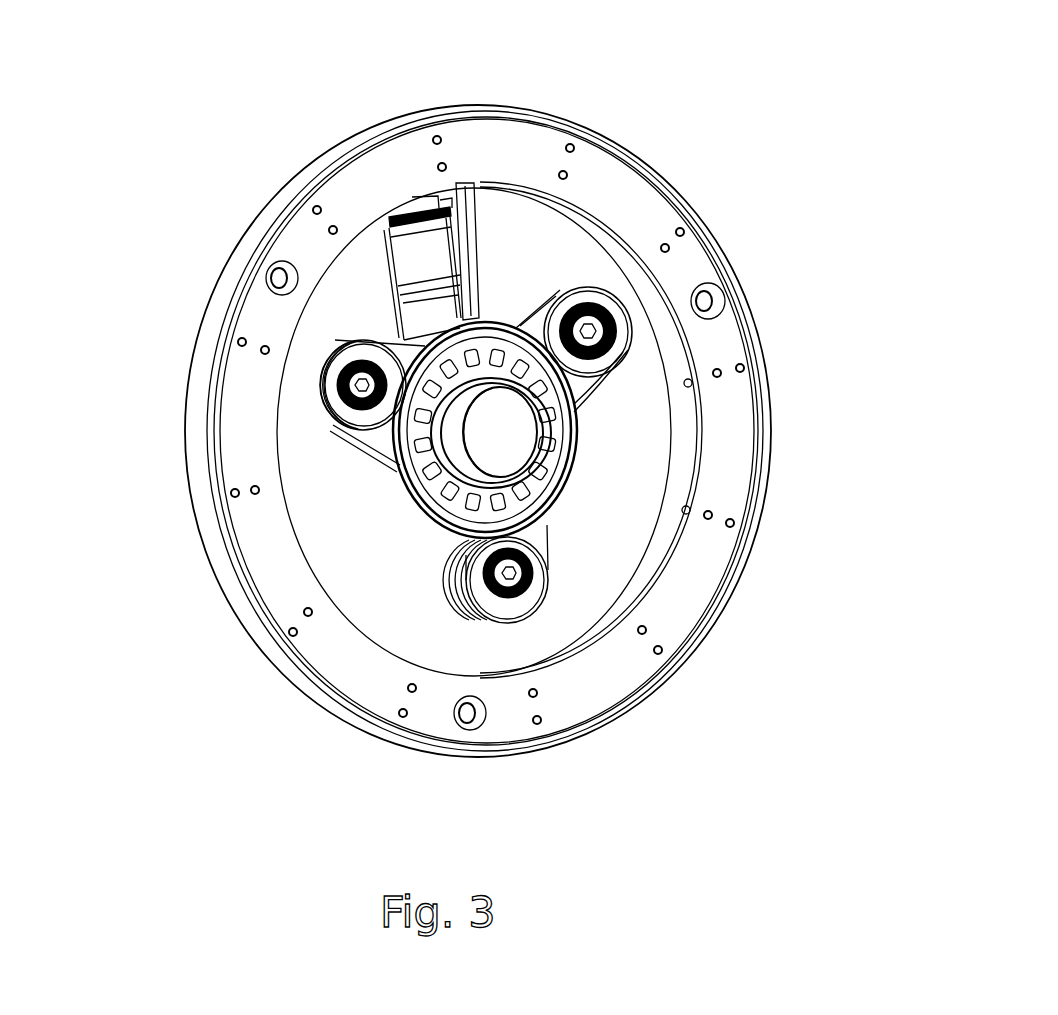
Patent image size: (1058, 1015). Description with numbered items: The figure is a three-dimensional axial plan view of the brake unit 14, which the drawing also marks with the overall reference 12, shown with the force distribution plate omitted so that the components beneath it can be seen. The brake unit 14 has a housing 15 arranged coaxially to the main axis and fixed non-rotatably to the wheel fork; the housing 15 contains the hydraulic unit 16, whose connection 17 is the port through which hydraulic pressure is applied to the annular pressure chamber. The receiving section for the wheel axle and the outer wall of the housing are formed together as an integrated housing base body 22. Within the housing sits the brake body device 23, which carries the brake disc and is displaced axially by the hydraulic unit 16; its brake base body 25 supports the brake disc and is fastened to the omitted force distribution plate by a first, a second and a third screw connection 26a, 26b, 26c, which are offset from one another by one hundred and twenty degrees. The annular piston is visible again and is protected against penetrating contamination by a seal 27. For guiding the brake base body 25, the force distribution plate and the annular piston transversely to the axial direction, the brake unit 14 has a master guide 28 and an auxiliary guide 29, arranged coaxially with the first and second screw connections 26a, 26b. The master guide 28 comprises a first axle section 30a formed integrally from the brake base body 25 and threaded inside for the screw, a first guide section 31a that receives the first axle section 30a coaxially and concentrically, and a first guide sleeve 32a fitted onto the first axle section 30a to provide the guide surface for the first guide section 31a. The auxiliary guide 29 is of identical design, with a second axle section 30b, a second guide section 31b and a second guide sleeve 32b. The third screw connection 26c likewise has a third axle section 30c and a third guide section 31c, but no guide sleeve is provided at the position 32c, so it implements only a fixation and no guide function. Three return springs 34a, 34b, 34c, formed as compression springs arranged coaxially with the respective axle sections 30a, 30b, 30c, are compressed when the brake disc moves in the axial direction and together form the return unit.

The brake disc assembly 12 is at (490, 422).
The brake unit 14 is at (290, 72).
The housing 15 is at (295, 292).
The hydraulic unit 16 is at (413, 274).
The connection 17 is at (417, 208).
The housing base body 22 is at (423, 328).
The brake body device 23 is at (206, 524).
The brake base body 25 is at (651, 574).
The first screw connection 26a is at (530, 582).
The second screw connection 26b is at (336, 367).
The third screw connection 26c is at (732, 301).
The seal 27 is at (537, 490).
The master guide 28 is at (292, 659).
The auxiliary guide 29 is at (195, 505).
The first axle section 30a is at (292, 659).
The second axle section 30b is at (195, 505).
The third axle section 30c is at (732, 301).
The first guide section 31a is at (292, 659).
The second guide section 31b is at (195, 505).
The third guide section 31c is at (732, 301).
The first guide sleeve 32a is at (500, 584).
The second guide sleeve 32b is at (333, 396).
The screw 32c is at (588, 331).
The first return spring 34a is at (452, 596).
The second return spring 34b is at (306, 420).
The third return spring 34c is at (592, 328).